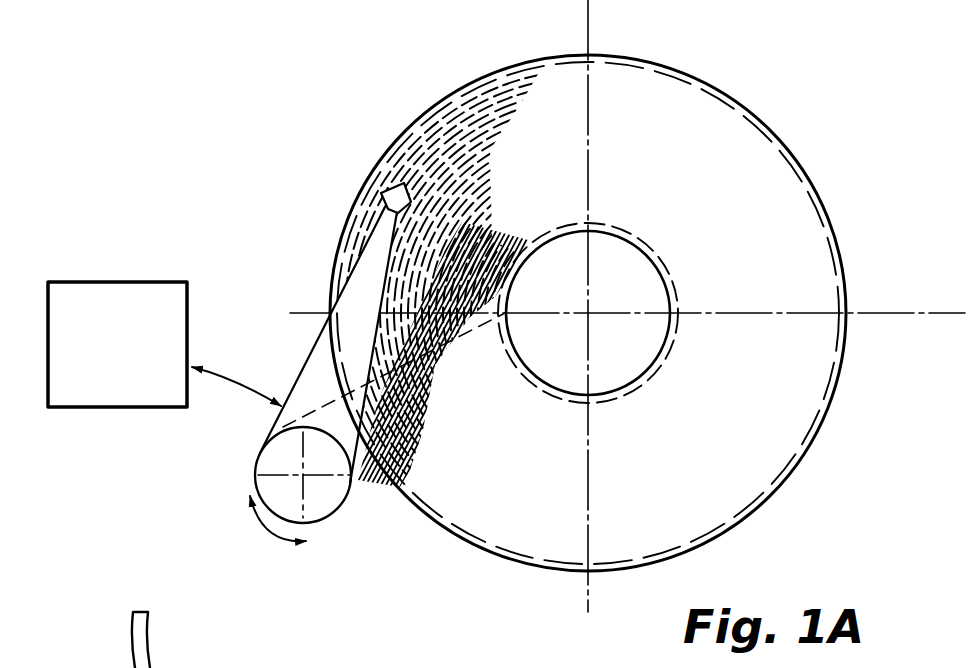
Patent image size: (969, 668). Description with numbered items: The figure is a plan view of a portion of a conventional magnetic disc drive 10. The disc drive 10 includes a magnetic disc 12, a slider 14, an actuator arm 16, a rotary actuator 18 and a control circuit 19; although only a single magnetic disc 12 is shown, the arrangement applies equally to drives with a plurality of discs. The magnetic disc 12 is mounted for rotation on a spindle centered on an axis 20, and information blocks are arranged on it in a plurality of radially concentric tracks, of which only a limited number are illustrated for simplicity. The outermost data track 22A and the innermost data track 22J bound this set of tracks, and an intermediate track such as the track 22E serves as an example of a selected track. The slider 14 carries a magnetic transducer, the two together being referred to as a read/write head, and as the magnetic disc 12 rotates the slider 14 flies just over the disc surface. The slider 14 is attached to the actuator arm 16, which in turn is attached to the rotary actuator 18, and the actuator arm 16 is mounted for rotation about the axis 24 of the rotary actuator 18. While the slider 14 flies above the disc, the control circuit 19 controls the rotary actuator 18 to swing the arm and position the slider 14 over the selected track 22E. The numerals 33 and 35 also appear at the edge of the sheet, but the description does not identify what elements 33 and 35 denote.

The magnetic disc drive 10 is at (818, 113).
The magnetic disc 12 is at (803, 452).
The slider 14 is at (382, 192).
The actuator arm 16 is at (312, 353).
The rotary actuator 18 is at (276, 463).
The control circuit 19 is at (131, 391).
The axis 20 is at (590, 312).
The outermost data track 22A is at (699, 83).
The data track 22E is at (545, 72).
The innermost data track 22J is at (633, 236).
The axis of rotary actuator 24 is at (306, 476).
The fragment element 33 is at (158, 659).
The fragment element 35 is at (185, 666).